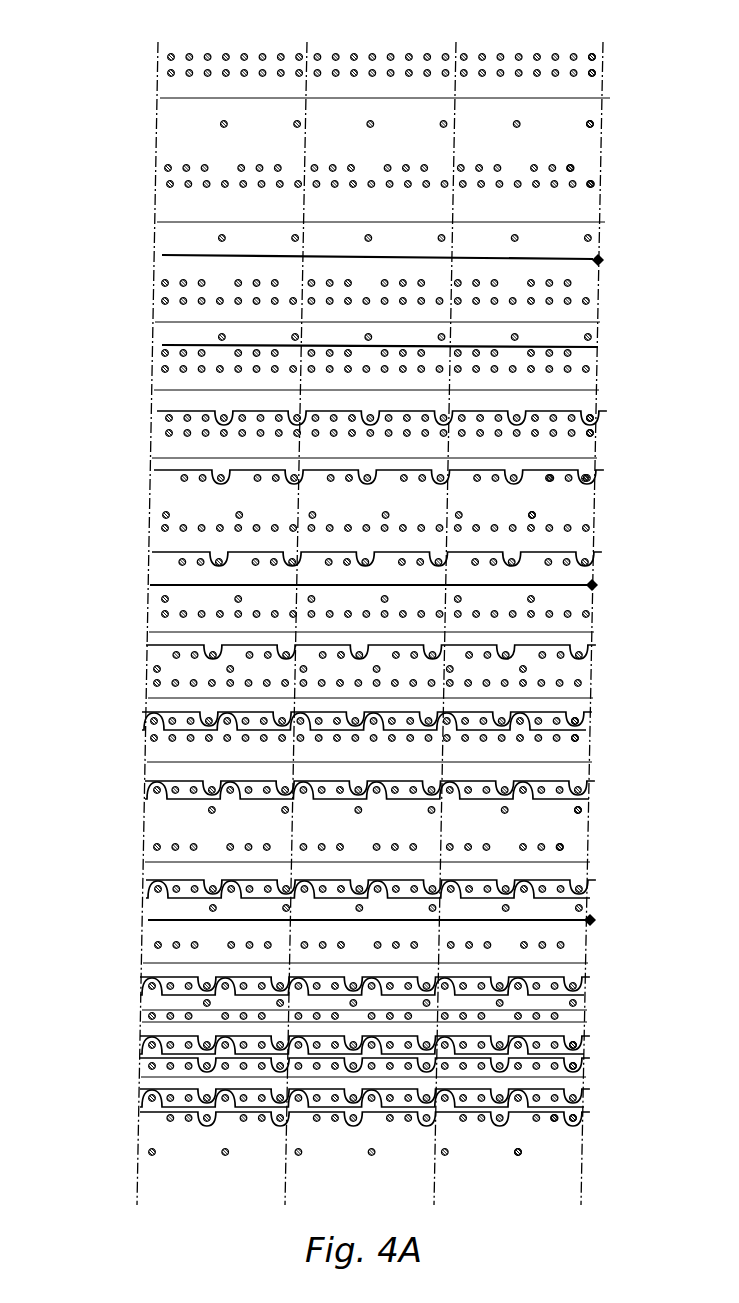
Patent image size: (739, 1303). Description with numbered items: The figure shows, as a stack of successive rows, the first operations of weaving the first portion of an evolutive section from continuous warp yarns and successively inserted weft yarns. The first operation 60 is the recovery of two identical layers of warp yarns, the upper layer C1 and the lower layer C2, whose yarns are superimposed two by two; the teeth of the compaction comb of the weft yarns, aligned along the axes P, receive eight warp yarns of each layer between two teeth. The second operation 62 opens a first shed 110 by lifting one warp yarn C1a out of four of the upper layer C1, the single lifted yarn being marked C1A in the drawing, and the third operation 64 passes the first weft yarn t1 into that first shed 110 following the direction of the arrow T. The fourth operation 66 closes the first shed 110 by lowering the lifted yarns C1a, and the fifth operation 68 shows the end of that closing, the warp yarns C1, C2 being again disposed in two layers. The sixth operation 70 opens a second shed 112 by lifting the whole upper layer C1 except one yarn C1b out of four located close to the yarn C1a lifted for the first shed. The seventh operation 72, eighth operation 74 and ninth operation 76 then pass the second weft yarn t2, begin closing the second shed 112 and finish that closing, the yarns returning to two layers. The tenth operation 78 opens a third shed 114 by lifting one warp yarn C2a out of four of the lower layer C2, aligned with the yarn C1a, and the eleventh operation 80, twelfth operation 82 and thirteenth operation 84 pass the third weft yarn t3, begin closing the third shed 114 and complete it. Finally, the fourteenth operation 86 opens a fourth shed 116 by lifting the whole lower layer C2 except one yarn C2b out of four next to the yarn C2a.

The first operation 60 is at (135, 76).
The second operation 62 is at (138, 178).
The third operation 64 is at (138, 289).
The fourth operation 66 is at (135, 358).
The fifth operation 68 is at (133, 430).
The sixth operation 70 is at (127, 521).
The seventh operation 72 is at (127, 600).
The eighth operation 74 is at (126, 674).
The ninth operation 76 is at (128, 729).
The tenth operation 78 is at (128, 806).
The eleventh operation 80 is at (122, 923).
The twelfth operation 82 is at (120, 993).
The thirteenth operation 84 is at (115, 1049).
The fourteenth operation 86 is at (115, 1121).
The first shed 110 is at (190, 136).
The second shed 112 is at (190, 494).
The third shed 114 is at (182, 823).
The fourth shed 116 is at (160, 1135).
The axes P is at (306, 46).
The upper layer of warp yarns C1 is at (596, 57).
The first cable single strand C1A is at (597, 124).
The lifted warp yarn of the upper layer C1a is at (588, 476).
The non-lifted warp yarn of the upper layer C1b is at (528, 515).
The lower layer of warp yarns C2 is at (596, 74).
The lifted warp yarn of the lower layer C2a is at (582, 810).
The non-lifted warp yarn of the lower layer C2b is at (523, 1154).
The first weft yarn t1 is at (596, 256).
The second weft yarn t2 is at (572, 586).
The third weft yarn t3 is at (560, 921).
The arrow T is at (603, 593).